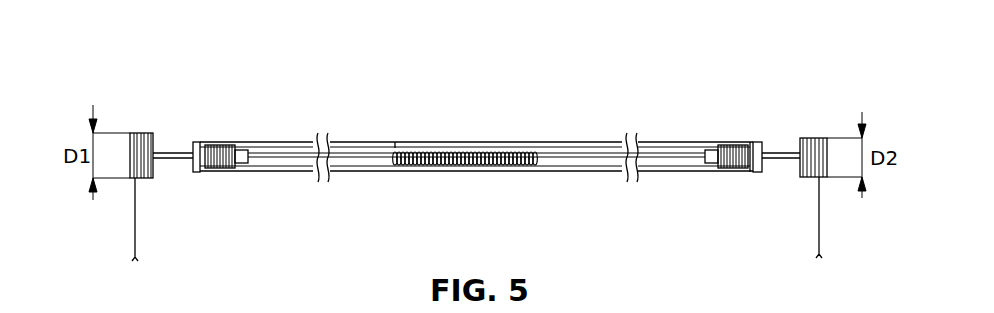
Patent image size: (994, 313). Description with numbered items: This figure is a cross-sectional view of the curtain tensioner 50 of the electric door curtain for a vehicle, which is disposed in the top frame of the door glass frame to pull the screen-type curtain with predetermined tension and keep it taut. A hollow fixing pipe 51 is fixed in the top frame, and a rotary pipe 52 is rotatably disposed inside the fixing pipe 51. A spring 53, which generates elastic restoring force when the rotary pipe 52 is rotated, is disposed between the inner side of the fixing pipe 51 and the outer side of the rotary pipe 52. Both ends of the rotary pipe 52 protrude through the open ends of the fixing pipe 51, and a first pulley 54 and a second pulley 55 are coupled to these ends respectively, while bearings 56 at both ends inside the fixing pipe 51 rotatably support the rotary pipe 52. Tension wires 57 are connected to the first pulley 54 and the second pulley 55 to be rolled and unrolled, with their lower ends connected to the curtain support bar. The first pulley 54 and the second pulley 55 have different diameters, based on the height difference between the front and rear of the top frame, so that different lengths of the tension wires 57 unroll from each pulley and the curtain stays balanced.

The curtain tensioner 50 is at (442, 128).
The fixing pipe 51 is at (282, 142).
The rotary pipe 52 is at (350, 147).
The spring 53 is at (498, 152).
The first pulley 54 is at (150, 133).
The second pulley 55 is at (805, 138).
The bearings 56 is at (205, 146).
The tension wires 57 is at (135, 230).